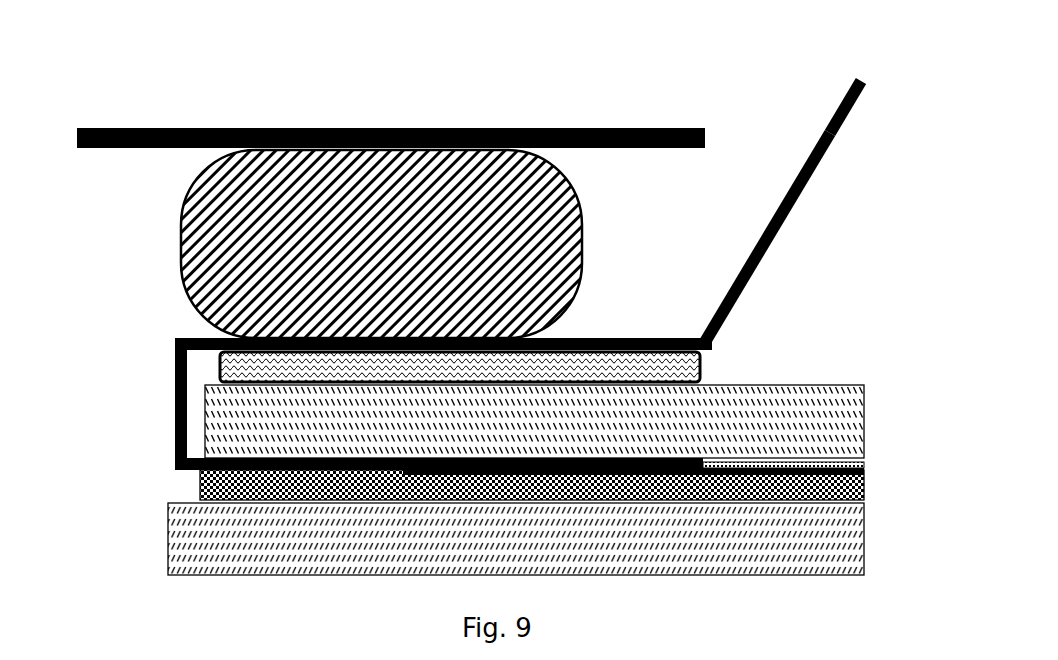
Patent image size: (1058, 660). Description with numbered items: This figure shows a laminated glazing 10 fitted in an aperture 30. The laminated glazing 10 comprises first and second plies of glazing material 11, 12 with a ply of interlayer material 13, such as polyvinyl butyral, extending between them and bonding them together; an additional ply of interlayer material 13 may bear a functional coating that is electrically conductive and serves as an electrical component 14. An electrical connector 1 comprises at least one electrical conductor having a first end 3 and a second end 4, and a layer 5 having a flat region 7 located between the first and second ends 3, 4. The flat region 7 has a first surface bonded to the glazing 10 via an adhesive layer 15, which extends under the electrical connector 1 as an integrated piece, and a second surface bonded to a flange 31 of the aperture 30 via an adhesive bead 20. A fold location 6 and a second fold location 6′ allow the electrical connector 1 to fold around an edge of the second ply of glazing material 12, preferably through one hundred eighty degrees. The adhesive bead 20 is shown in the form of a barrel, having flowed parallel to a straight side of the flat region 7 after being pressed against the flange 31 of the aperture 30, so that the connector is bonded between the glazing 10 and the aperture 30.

The electrical connector 1 is at (505, 259).
The first end 3 is at (705, 460).
The second end 4 is at (863, 77).
The layer 5 is at (770, 245).
The fold location 6 is at (170, 458).
The second fold location 6′ is at (173, 347).
The flat region 7 is at (207, 330).
The laminated glazing 10 is at (496, 450).
The first ply of glazing material 11 is at (168, 540).
The second ply of glazing material 12 is at (205, 421).
The ply of interlayer material 13 is at (200, 490).
The electrical component 14 is at (865, 470).
The adhesive layer 15 is at (220, 368).
The adhesive bead 20 is at (180, 245).
The aperture 30 is at (374, 96).
The flange 31 is at (380, 128).